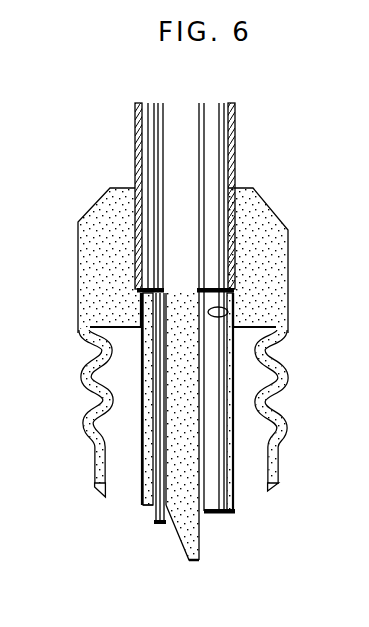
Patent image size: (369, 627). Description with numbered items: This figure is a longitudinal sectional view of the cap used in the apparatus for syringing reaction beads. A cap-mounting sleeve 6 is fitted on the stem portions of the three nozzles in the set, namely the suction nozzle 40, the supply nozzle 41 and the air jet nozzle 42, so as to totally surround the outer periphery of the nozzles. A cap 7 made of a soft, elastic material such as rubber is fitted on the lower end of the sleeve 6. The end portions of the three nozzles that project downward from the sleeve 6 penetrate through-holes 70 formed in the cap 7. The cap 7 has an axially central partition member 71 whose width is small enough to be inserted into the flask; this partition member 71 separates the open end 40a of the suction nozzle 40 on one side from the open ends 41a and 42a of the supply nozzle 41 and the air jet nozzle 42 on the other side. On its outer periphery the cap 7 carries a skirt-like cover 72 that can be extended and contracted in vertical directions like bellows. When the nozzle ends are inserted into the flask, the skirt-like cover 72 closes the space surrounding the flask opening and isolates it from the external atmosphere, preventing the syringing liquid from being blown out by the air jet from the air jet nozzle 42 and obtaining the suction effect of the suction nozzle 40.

The cap-mounting sleeve 6 is at (234, 173).
The cap 7 is at (289, 243).
The suction nozzle 40 is at (221, 204).
The open end of the suction nozzle 40a is at (218, 514).
The supply nozzle 41 is at (157, 219).
The open end of the supply nozzle 41a is at (161, 523).
The air jet nozzle 42 is at (146, 409).
The open end of the air jet nozzle 42a is at (158, 527).
The through-holes 70 is at (228, 310).
The partition member 71 is at (200, 538).
The skirt-like cover 72 is at (279, 457).